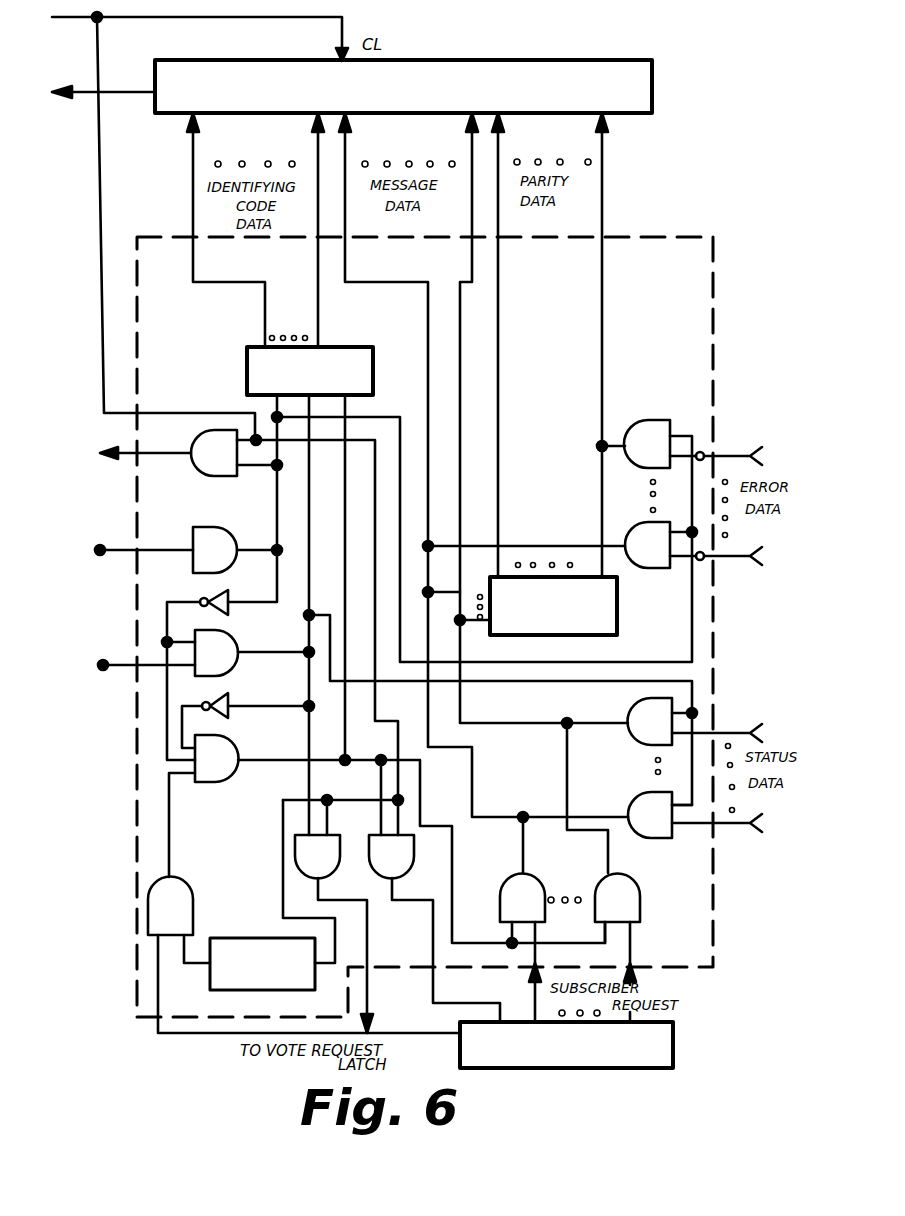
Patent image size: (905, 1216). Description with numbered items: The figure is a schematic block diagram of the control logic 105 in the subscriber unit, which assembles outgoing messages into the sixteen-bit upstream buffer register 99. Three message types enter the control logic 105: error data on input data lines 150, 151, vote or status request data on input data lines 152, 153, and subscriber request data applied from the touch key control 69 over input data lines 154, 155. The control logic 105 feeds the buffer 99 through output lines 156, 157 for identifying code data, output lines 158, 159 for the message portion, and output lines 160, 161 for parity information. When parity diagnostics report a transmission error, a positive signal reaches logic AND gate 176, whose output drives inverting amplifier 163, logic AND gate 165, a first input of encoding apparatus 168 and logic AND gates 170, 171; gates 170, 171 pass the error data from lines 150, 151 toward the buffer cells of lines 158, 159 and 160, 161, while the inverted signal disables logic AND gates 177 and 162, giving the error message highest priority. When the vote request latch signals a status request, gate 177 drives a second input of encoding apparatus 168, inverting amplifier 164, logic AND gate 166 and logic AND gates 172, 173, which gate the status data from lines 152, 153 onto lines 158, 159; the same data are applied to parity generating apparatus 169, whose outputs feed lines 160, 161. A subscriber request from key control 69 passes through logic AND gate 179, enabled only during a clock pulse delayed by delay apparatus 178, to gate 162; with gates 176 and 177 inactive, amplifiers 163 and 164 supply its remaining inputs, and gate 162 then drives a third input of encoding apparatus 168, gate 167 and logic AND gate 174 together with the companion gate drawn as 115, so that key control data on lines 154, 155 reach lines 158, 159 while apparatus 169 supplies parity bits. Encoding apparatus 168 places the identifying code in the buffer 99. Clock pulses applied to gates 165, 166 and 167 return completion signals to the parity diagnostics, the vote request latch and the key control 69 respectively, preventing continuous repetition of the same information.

The upstream buffer register 99 is at (584, 56).
The control logic 105 is at (650, 238).
The output line 156 is at (195, 230).
The output line 157 is at (317, 266).
The output line 158 is at (347, 264).
The output line 159 is at (467, 266).
The output line 160 is at (499, 262).
The output line 161 is at (602, 266).
The encoding apparatus 168 is at (374, 372).
The logic AND gate 165 is at (194, 432).
The logic AND gate 176 is at (192, 533).
The inverting amplifier 163 is at (222, 598).
The logic AND gate 177 is at (236, 634).
The inverting amplifier 164 is at (232, 696).
The logic AND gate 162 is at (204, 784).
The logic AND gate 166 is at (294, 852).
The logic AND gate 167 is at (414, 856).
The logic AND gate 179 is at (147, 908).
The delay apparatus 178 is at (228, 938).
The AND gate 115 is at (563, 860).
The logic AND gate 174 is at (620, 876).
The input data line 154 is at (634, 950).
The input data line 155 is at (533, 980).
The touch key control 69 is at (678, 1040).
The logic AND gate 170 is at (632, 421).
The logic AND gate 171 is at (634, 569).
The input data line 150 is at (718, 458).
The input data line 151 is at (722, 556).
The parity generating apparatus 169 is at (540, 636).
The logic AND gate 172 is at (634, 703).
The logic AND gate 173 is at (634, 797).
The input data line 152 is at (734, 734).
The input data line 153 is at (730, 826).